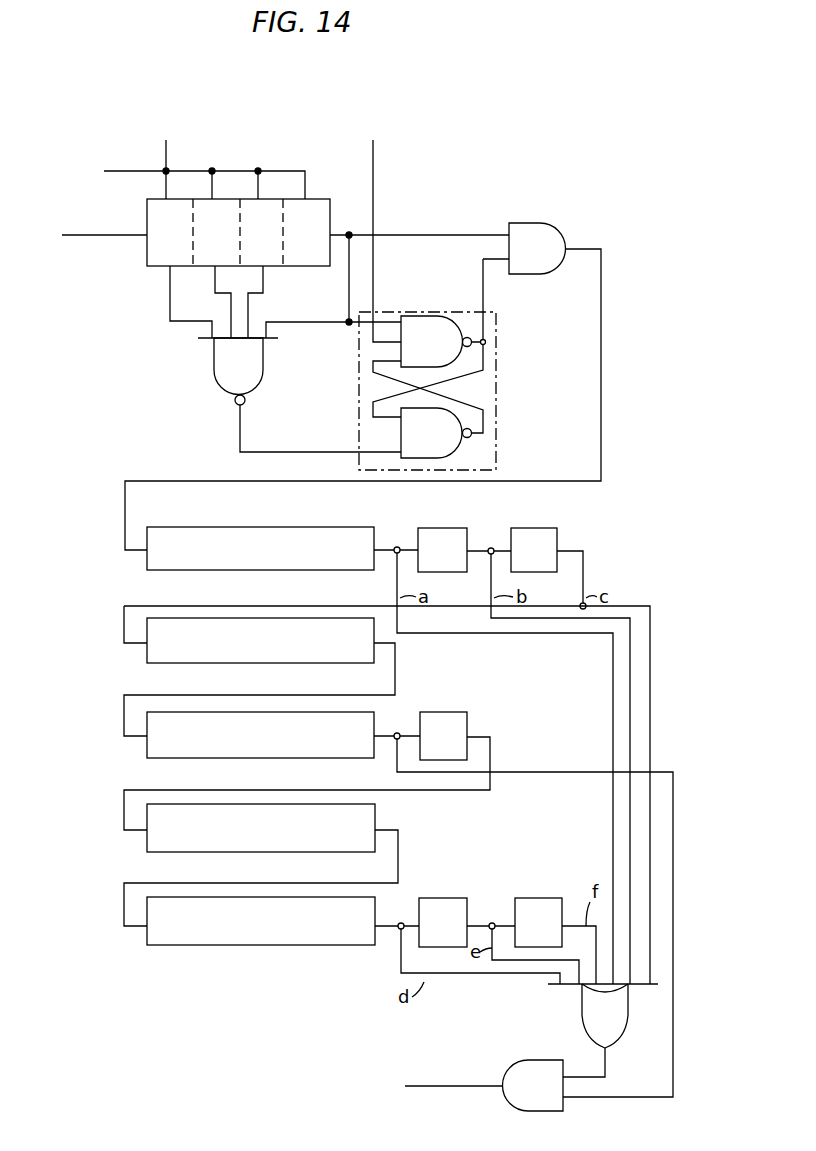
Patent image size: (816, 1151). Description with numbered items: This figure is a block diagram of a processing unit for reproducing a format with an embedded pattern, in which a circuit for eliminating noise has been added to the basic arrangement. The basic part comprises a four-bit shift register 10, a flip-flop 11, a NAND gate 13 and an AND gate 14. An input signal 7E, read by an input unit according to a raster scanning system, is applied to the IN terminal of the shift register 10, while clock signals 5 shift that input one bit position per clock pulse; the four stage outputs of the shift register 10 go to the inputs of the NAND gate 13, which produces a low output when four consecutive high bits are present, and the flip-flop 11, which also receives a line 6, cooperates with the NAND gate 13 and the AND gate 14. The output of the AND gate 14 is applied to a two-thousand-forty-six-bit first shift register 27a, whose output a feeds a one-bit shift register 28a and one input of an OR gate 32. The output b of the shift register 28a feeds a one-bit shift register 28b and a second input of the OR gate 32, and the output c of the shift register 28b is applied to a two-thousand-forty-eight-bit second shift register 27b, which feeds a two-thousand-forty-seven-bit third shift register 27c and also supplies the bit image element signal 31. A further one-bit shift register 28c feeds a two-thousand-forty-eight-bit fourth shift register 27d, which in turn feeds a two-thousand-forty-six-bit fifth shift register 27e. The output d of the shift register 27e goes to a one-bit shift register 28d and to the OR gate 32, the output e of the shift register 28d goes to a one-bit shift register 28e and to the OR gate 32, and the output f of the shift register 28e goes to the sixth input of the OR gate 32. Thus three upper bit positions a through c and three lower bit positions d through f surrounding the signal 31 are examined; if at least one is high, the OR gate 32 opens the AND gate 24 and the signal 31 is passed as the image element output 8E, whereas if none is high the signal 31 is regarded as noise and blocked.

The clock signals 5 is at (204, 158).
The reset line 6 is at (383, 230).
The input signal line 7E is at (97, 236).
The output 8E is at (445, 1086).
The 4-bit shift register 10 is at (314, 198).
The flip-flop 11 is at (497, 397).
The NAND gate 13 is at (216, 384).
The AND gate 14 is at (534, 223).
The AND gate 24 is at (510, 1094).
The 2046-bit first shift register 27a is at (293, 527).
The 2048-bit second shift register 27b is at (300, 664).
The 2047-bit third shift register 27c is at (300, 758).
The 2048-bit fourth shift register 27d is at (288, 852).
The 2046-bit fifth shift register 27e is at (312, 945).
The 1-bit shift register 28a is at (431, 528).
The 1-bit shift register 28b is at (538, 528).
The shift register 28c is at (445, 712).
The 1-bit shift register 28d is at (453, 898).
The 1-bit shift register 28e is at (539, 898).
The bit image element signal 31 is at (545, 772).
The OR gate 32 is at (627, 1032).